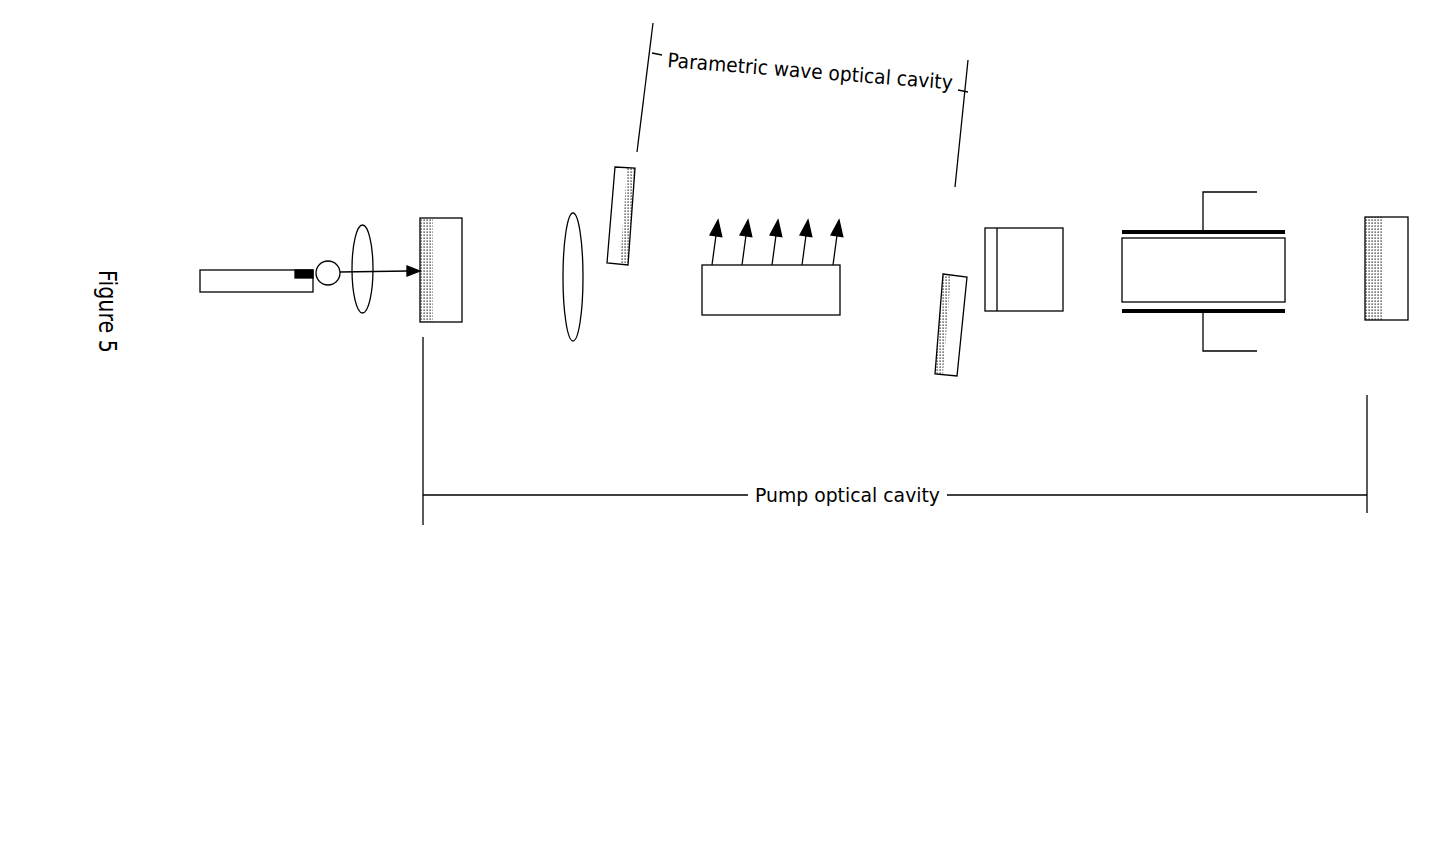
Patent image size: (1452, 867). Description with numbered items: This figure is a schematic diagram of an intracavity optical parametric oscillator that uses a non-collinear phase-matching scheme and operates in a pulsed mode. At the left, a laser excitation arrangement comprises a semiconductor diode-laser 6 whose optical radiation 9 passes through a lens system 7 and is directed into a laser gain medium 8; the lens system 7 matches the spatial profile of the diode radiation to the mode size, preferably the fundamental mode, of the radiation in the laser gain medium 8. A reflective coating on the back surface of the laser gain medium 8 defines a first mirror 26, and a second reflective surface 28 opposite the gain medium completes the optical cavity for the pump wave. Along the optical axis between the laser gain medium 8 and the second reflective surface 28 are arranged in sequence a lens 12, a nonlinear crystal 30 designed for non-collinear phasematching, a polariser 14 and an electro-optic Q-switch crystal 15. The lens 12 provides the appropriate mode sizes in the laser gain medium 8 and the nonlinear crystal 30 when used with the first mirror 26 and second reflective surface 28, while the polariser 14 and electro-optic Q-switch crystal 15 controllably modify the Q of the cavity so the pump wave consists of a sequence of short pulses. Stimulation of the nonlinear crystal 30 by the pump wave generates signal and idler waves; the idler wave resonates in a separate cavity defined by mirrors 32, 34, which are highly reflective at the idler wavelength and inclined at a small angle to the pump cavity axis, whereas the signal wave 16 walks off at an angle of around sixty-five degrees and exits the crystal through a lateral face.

The semiconductor diode-laser 6 is at (213, 275).
The lens system 7 is at (328, 261).
The laser gain medium 8 is at (442, 230).
The optical radiation 9 is at (382, 272).
The lens 12 is at (575, 228).
The polariser 14 is at (1013, 243).
The electro-optic Q-switch crystal 15 is at (1148, 250).
The signal wave 16 is at (780, 222).
The first mirror 26 is at (427, 297).
The second reflective surface 28 is at (1385, 225).
The nonlinear crystal 30 is at (765, 305).
The mirror 32 is at (617, 260).
The mirror 34 is at (947, 363).